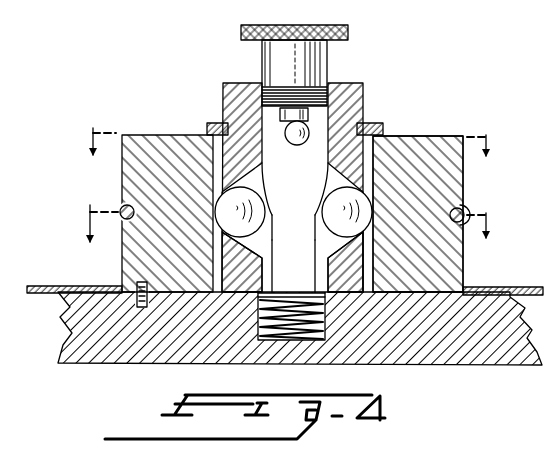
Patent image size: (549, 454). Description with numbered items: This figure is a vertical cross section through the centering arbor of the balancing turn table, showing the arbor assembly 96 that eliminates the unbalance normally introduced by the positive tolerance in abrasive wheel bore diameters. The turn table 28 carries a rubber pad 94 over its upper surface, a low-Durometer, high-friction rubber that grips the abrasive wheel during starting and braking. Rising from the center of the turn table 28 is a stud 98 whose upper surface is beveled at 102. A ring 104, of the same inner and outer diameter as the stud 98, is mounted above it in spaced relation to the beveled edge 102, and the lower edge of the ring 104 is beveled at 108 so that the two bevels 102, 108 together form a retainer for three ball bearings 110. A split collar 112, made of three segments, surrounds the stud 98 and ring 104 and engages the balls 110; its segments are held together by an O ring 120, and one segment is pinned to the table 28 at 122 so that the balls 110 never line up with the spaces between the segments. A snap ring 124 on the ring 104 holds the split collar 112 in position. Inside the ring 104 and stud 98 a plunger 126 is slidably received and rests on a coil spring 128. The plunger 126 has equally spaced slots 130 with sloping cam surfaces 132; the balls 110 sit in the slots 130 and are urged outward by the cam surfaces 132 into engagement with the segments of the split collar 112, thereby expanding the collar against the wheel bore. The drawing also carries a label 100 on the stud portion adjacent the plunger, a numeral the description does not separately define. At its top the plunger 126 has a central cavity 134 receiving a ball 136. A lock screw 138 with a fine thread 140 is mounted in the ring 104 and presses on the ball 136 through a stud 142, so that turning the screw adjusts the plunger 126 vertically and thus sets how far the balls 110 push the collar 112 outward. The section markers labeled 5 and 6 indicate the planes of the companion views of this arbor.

The turn table 28 is at (58, 359).
The rubber pad 94 is at (513, 288).
The arbor assembly 96 is at (448, 77).
The stud 98 is at (246, 283).
The right sleeve lower portion 100 is at (324, 277).
The beveled upper surface 102 is at (366, 249).
The ring 104 is at (223, 83).
The beveled lower edge 108 is at (373, 177).
The ball bearings 110 is at (229, 212).
The split collar 112 is at (483, 173).
The O ring 120 is at (124, 218).
The pin 122 is at (141, 308).
The snap ring 124 is at (384, 129).
The plunger 126 is at (274, 155).
The coil spring 128 is at (287, 335).
The slots 130 is at (267, 272).
The cam surfaces 132 is at (266, 191).
The central cavity 134 is at (305, 126).
The ball 136 is at (232, 123).
The lock screw 138 is at (313, 61).
The fine thread 140 is at (273, 85).
The stud 142 is at (305, 115).
The section line 5 is at (287, 214).
The section line 6 is at (284, 128).